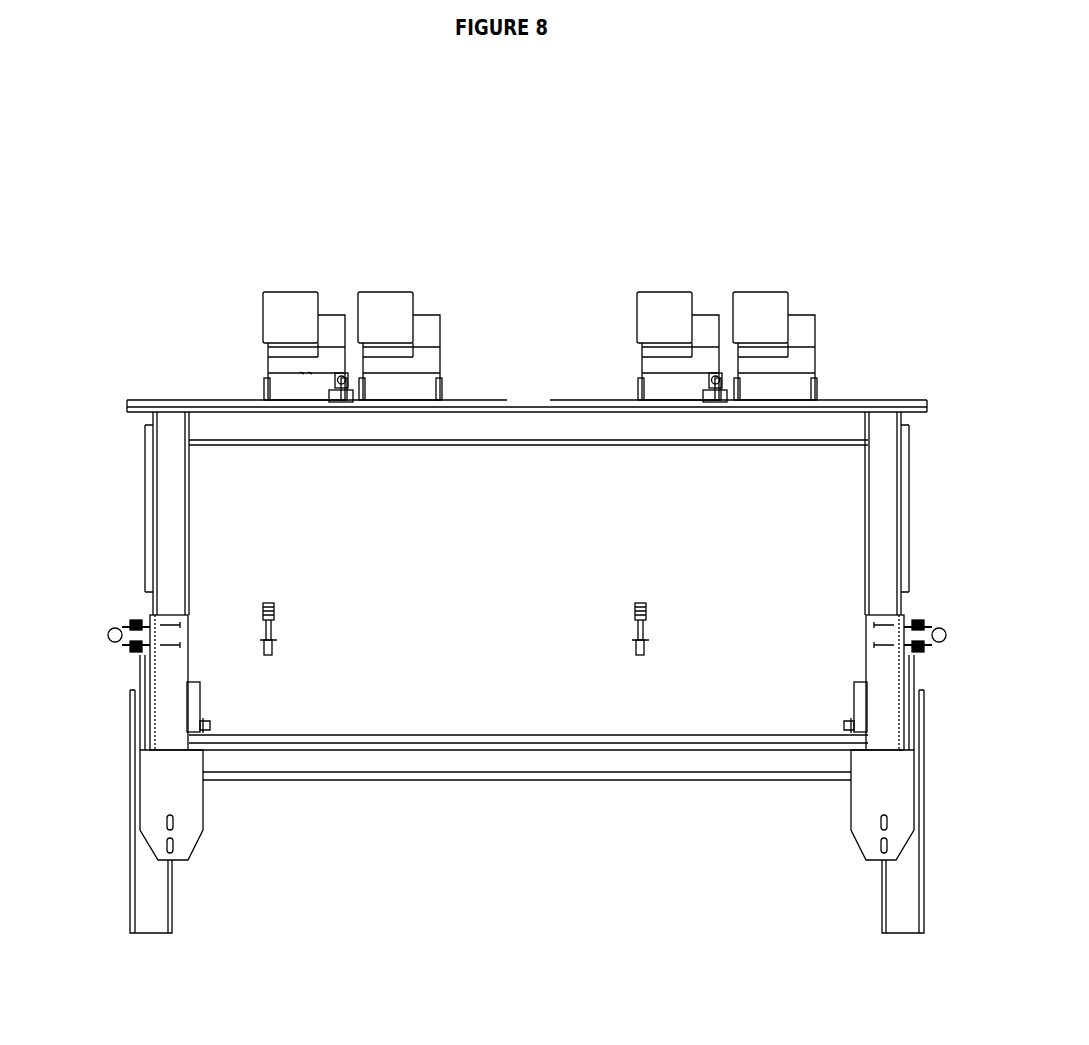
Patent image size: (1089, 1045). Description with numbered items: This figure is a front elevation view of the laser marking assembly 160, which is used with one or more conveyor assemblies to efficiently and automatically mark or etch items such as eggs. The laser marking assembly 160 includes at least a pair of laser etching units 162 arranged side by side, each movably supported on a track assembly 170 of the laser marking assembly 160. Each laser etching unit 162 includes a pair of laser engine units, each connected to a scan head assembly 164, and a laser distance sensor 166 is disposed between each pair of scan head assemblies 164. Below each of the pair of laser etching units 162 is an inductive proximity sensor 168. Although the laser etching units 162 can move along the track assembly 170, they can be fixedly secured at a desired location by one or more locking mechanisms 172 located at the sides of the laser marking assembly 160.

The laser marking assembly 160 is at (913, 118).
The laser etching unit 162 is at (332, 330).
The scan head assembly 164 is at (267, 313).
The laser distance sensor 166 is at (352, 403).
The inductive proximity sensor 168 is at (273, 610).
The track assembly 170 is at (660, 817).
The locking mechanism 172 is at (118, 628).